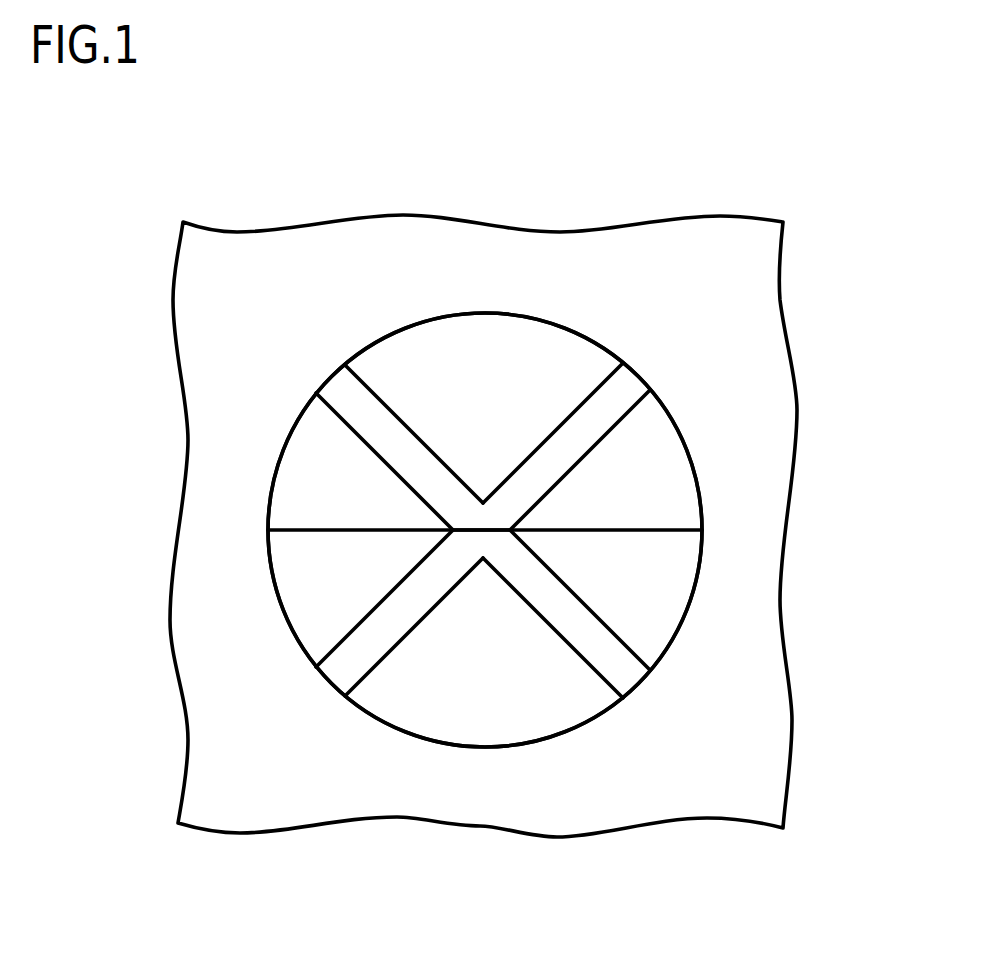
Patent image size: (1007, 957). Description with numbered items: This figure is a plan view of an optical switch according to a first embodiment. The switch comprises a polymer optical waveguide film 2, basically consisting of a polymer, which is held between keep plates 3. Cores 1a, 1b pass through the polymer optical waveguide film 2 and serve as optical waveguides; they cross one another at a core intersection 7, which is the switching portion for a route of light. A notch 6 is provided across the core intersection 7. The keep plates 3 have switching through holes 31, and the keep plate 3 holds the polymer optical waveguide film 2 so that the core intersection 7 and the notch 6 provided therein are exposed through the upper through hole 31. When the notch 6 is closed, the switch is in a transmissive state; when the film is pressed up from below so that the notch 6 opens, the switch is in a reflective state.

The core 1a is at (393, 437).
The core 1b is at (593, 427).
The polymer optical waveguide film 2 is at (653, 597).
The keep plate 3 is at (743, 322).
The switching through hole 31 is at (280, 445).
The notch 6 is at (298, 531).
The core intersection 7 is at (472, 530).